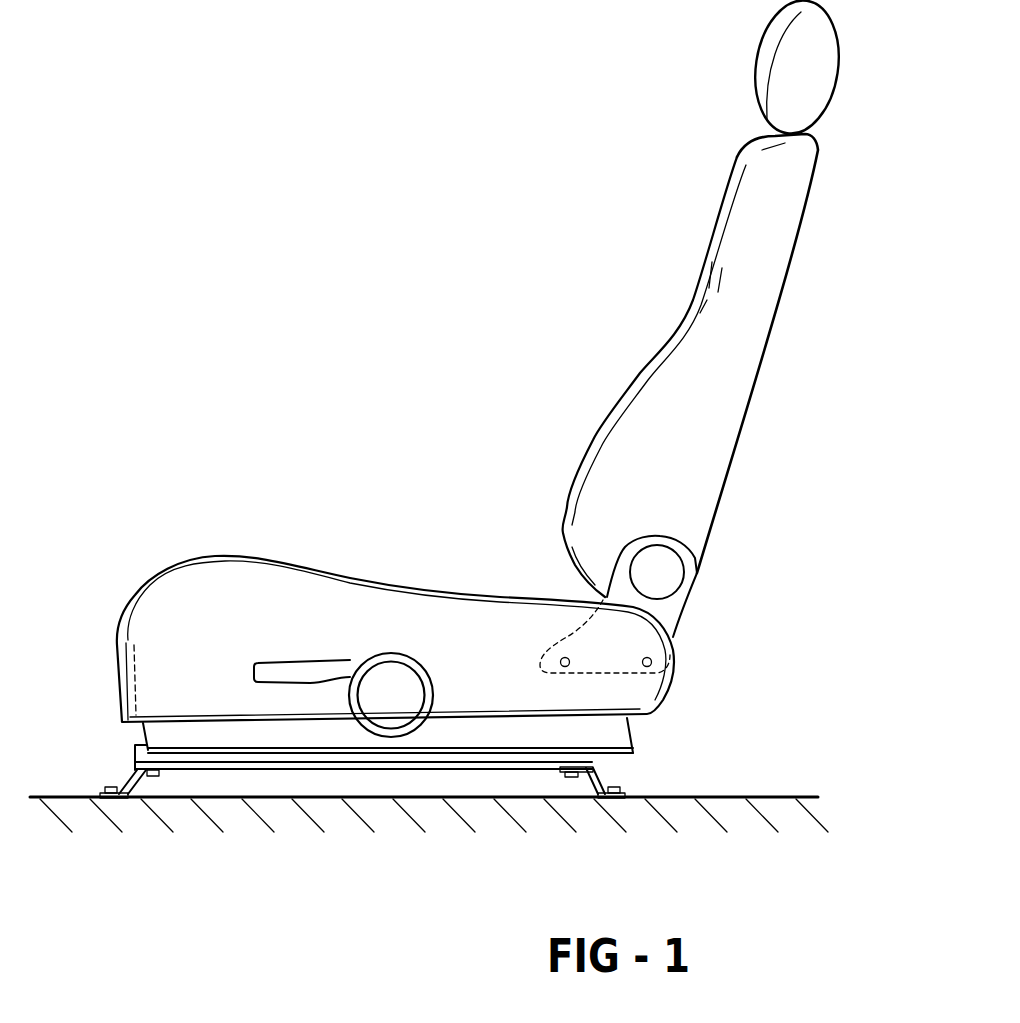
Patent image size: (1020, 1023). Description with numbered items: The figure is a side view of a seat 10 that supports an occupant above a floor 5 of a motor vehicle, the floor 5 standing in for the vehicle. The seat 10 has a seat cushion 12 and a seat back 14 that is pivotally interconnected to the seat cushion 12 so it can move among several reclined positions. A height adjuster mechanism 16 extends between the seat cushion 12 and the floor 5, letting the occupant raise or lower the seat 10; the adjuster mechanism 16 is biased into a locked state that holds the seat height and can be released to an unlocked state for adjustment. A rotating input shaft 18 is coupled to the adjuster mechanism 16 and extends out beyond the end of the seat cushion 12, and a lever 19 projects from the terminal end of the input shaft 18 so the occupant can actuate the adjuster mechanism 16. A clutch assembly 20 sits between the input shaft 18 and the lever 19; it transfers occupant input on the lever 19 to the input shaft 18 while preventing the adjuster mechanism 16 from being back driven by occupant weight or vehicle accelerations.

The seat 10 is at (453, 402).
The seat cushion 12 is at (136, 620).
The seat back 14 is at (750, 237).
The height adjuster mechanism 16 is at (135, 746).
The rotating input shaft 18 is at (380, 712).
The lever 19 is at (290, 664).
The clutch assembly 20 is at (401, 630).
The floor 5 is at (714, 797).